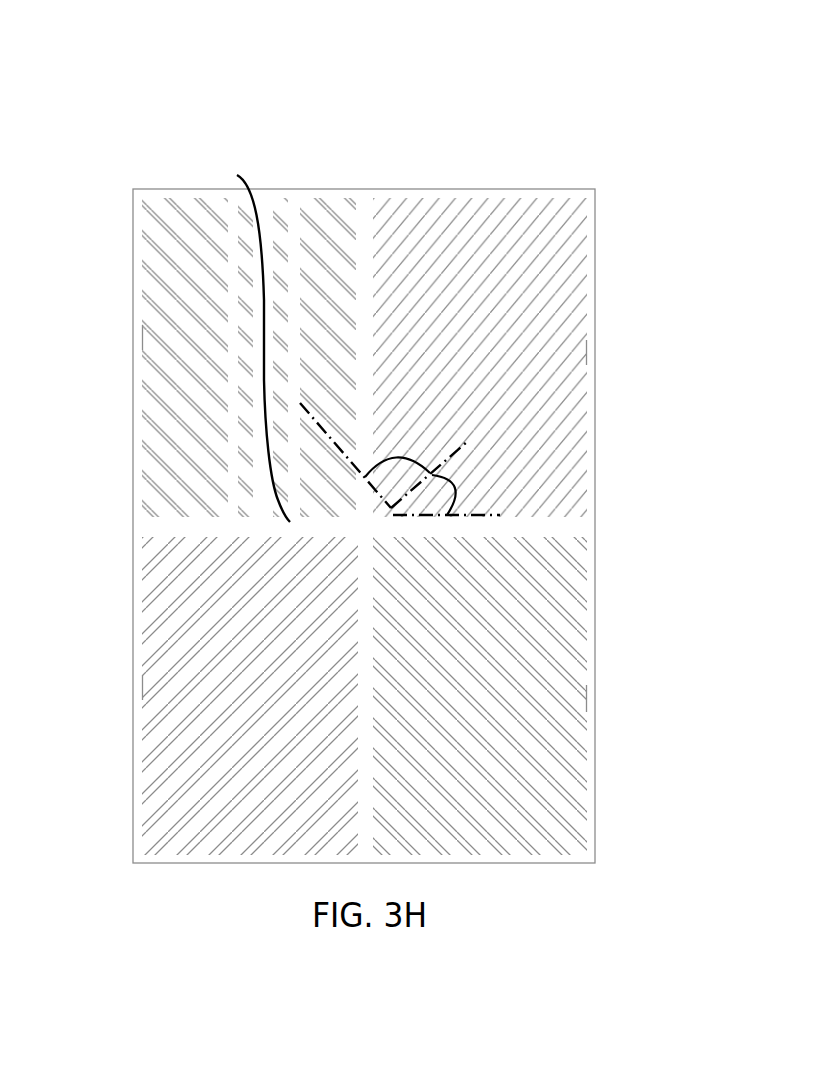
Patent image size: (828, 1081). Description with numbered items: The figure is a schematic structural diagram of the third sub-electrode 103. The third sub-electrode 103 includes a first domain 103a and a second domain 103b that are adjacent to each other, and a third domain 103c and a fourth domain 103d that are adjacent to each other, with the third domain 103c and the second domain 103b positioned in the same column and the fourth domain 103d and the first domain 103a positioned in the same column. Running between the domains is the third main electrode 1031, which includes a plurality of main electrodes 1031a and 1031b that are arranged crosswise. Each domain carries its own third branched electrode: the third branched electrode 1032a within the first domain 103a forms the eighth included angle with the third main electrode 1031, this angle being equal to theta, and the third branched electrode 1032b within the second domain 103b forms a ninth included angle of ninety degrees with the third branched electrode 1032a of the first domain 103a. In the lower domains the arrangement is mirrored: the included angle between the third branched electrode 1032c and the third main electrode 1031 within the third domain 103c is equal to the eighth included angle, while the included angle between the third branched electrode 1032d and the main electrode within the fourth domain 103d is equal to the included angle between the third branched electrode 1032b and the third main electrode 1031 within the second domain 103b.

The third sub-electrode 103 is at (122, 61).
The first domain 103a is at (597, 245).
The second domain 103b is at (132, 235).
The third domain 103c is at (132, 600).
The fourth domain 103d is at (597, 612).
The third main electrode 1031 is at (338, 144).
The main electrode 1031a is at (250, 335).
The main electrode 1031b is at (368, 210).
The third branched electrode 1032a is at (575, 352).
The third branched electrode 1032b is at (165, 338).
The third branched electrode 1032c is at (163, 687).
The third branched electrode 1032d is at (575, 698).